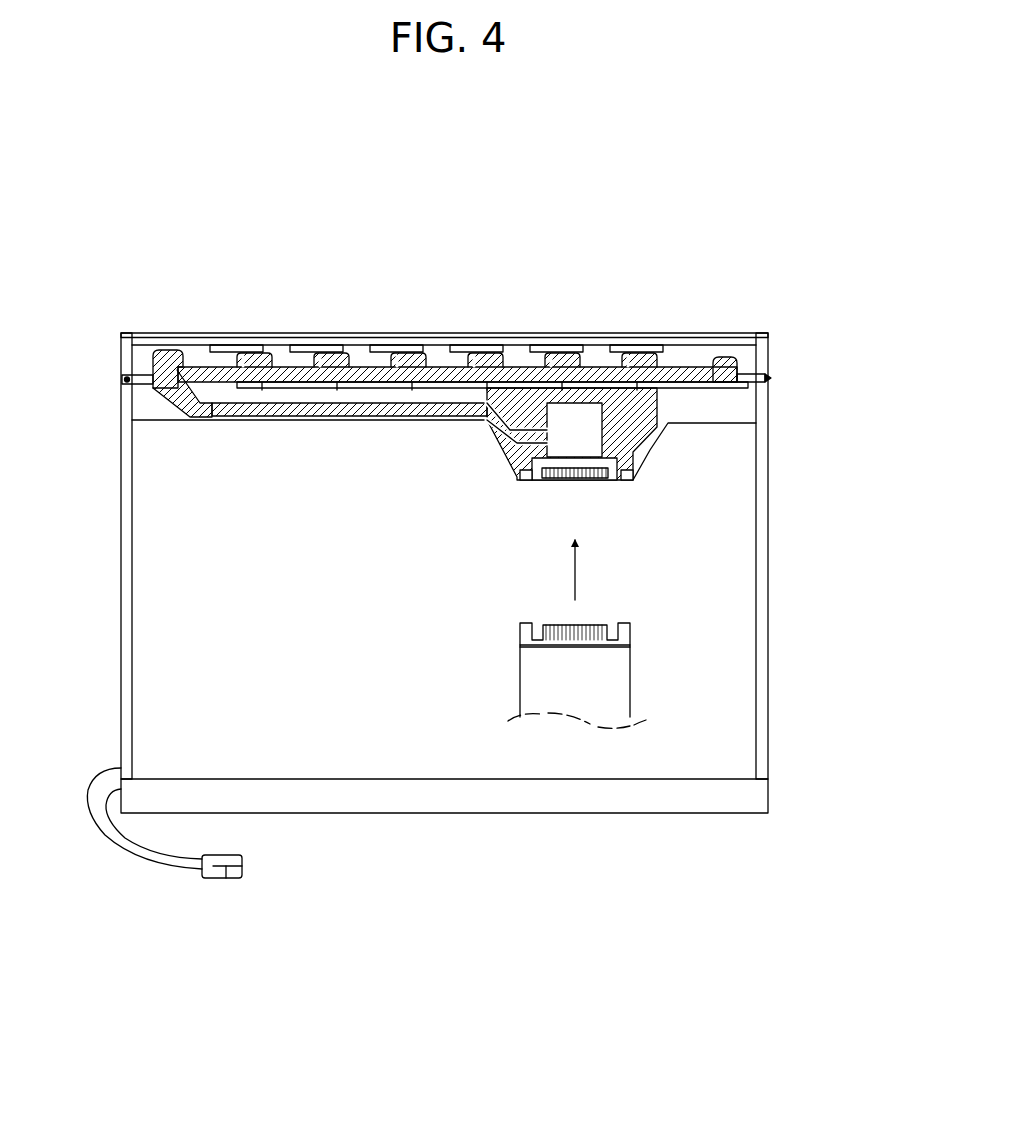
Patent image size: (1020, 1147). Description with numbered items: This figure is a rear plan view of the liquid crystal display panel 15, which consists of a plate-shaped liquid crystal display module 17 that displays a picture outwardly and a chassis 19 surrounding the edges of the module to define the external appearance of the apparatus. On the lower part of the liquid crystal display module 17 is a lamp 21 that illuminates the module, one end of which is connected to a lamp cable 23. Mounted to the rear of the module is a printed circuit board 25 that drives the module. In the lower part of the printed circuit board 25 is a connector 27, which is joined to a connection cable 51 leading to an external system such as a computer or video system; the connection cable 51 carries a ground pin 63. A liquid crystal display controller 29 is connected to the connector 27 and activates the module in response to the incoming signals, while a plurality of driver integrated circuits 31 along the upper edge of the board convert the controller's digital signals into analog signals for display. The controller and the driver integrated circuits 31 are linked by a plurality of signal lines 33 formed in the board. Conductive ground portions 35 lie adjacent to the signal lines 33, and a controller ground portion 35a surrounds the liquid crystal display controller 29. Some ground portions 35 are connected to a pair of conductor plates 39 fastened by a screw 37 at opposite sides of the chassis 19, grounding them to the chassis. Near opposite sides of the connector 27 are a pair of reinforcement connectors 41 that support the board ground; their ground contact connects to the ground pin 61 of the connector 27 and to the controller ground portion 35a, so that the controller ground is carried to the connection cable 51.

The liquid crystal display panel 15 is at (204, 300).
The liquid crystal display module 17 is at (167, 540).
The chassis 19 is at (127, 483).
The lamp 21 is at (342, 806).
The lamp cable 23 is at (224, 880).
The printed circuit board 25 is at (752, 406).
The connector 27 is at (602, 481).
The liquid crystal display controller 29 is at (577, 420).
The driver integrated circuits 31 is at (303, 345).
The signal lines 33 is at (390, 405).
The ground portions 35 is at (153, 360).
The controller ground portion 35a is at (518, 347).
The screw 37 is at (123, 380).
The conductor plates 39 is at (133, 388).
The reinforcement connector 41 is at (507, 481).
The connection cable 51 is at (625, 683).
The ground pin of the connector 61 is at (553, 481).
The ground pin of the connection cable 63 is at (527, 620).